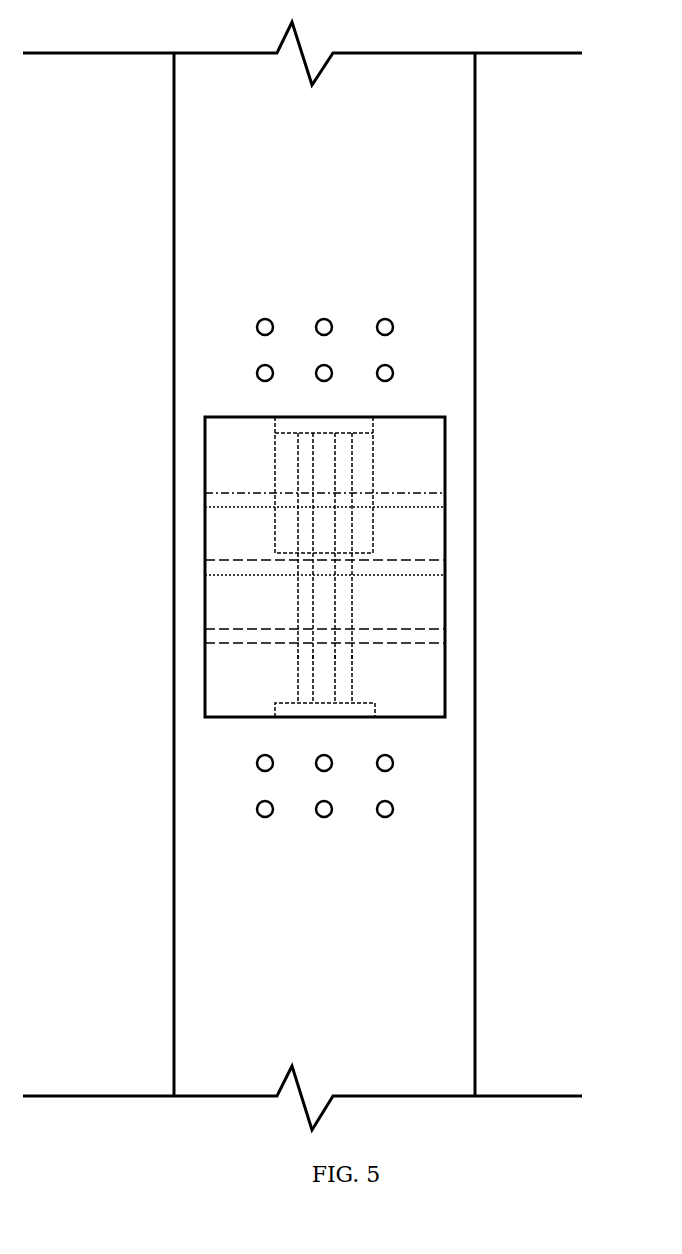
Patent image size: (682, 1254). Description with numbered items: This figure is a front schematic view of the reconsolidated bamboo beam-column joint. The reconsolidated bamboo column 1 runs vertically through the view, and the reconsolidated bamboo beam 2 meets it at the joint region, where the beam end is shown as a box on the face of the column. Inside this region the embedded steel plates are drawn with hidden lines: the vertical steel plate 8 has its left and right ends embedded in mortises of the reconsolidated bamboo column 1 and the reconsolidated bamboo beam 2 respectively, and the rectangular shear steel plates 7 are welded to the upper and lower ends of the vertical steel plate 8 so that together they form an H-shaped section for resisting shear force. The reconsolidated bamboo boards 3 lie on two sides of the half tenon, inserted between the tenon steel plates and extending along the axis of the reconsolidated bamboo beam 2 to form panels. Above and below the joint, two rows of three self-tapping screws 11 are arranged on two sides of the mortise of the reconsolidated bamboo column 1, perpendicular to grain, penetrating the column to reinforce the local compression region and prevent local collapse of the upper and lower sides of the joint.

The reconsolidated bamboo column 1 is at (236, 262).
The reconsolidated bamboo beam 2 is at (233, 694).
The reconsolidated bamboo board 3 is at (287, 480).
The rectangular shear steel plate 7 is at (298, 430).
The vertical steel plate 8 is at (303, 657).
The self-tapping screw 11 is at (330, 318).